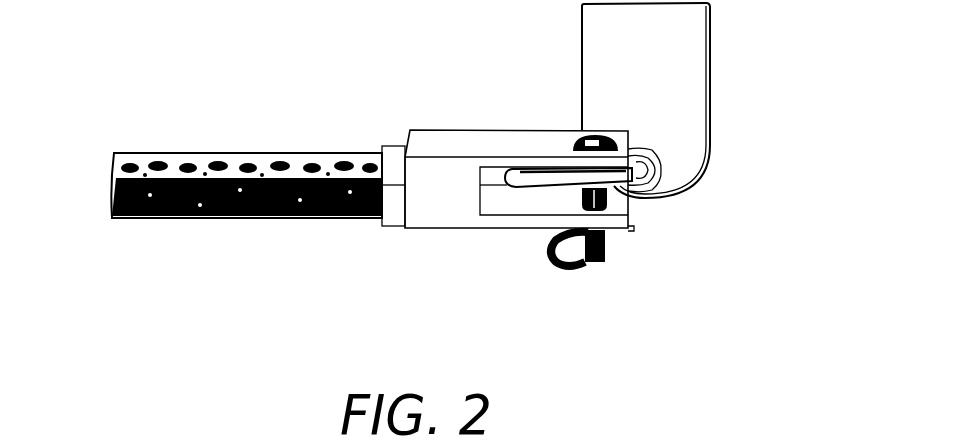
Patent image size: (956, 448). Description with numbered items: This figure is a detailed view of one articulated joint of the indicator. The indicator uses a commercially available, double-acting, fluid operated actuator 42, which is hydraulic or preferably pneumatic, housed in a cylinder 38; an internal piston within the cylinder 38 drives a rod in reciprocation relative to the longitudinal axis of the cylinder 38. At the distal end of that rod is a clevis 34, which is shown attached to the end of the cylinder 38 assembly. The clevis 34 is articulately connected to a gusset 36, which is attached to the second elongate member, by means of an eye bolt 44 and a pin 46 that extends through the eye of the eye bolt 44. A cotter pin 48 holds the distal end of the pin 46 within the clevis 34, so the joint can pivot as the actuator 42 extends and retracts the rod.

The clevis 34 is at (443, 229).
The gusset 36 is at (717, 88).
The cylinder 38 is at (191, 153).
The actuator 42 is at (262, 218).
The eye bolt 44 is at (548, 187).
The pin 46 is at (605, 256).
The cotter pin 48 is at (628, 230).